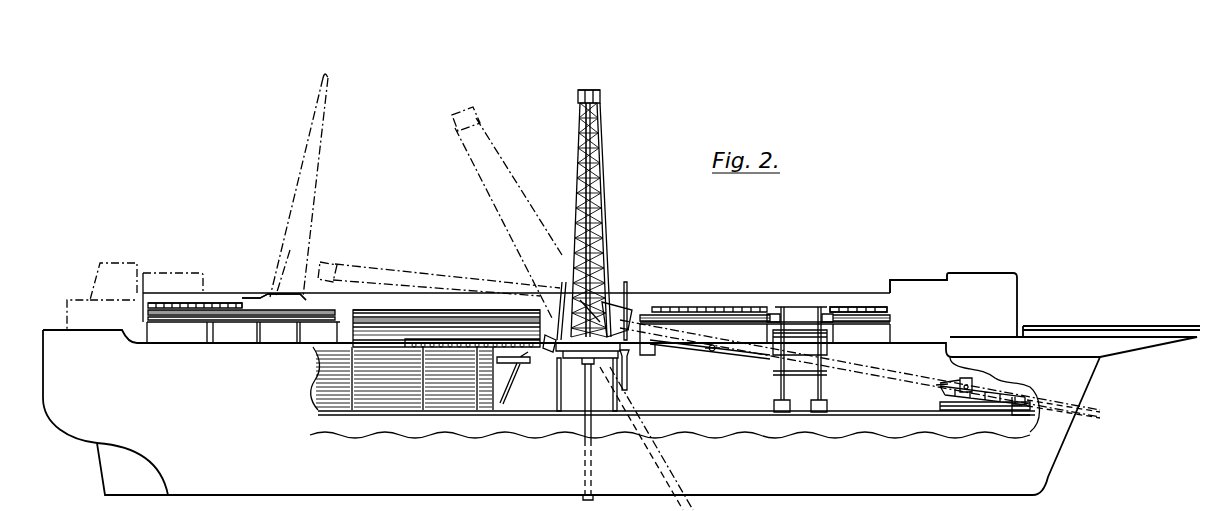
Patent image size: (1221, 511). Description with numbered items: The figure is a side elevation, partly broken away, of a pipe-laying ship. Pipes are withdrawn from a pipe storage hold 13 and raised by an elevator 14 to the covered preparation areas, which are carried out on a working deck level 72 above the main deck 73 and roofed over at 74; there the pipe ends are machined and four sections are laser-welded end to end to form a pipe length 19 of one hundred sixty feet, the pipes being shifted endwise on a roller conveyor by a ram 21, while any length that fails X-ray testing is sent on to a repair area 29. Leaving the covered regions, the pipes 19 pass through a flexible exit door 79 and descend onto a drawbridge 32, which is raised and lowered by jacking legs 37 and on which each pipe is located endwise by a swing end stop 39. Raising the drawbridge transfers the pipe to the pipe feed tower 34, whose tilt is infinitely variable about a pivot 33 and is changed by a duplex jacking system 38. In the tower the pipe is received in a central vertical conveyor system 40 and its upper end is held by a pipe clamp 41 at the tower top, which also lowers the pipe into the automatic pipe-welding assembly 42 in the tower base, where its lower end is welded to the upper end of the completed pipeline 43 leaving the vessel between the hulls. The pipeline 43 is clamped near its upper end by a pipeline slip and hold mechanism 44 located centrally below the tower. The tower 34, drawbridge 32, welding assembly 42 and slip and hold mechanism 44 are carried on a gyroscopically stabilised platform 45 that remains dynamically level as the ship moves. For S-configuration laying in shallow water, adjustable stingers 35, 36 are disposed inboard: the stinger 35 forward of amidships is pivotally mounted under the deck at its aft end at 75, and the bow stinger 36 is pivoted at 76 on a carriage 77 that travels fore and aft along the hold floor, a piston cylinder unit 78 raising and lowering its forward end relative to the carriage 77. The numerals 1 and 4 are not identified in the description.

The pipeline 1 is at (1068, 411).
The section line 4- 4 is at (830, 273).
The pipe storage hold 13 is at (758, 403).
The elevator 14 is at (820, 367).
The pipe length 19 is at (417, 323).
The ram 21 is at (847, 320).
The repair area 29 is at (214, 312).
The drawbridge 32 is at (512, 350).
The pivot 33 is at (574, 305).
The pipe feed tower 34 is at (578, 184).
The stinger 35 is at (740, 352).
The bow stinger 36 is at (1003, 393).
The jacking legs 37 is at (503, 398).
The duplex jacking system 38 is at (632, 355).
The swing end stop 39 is at (550, 348).
The central vertical conveyor system 40 is at (600, 178).
The pipe clamp 41 is at (600, 98).
The pipe-welding assembly 42 is at (597, 310).
The completed pipeline 43 is at (585, 410).
The pipeline slip and hold mechanism 44 is at (583, 357).
The gyroscopically stabilised platform 45 is at (626, 305).
The working deck level 72 is at (893, 330).
The main deck 73 is at (934, 342).
The roof 74 is at (244, 296).
The pivot mounting 75 is at (715, 348).
The pivot mounting 76 is at (963, 393).
The carriage 77 is at (990, 410).
The piston cylinder unit 78 is at (1017, 410).
The flexible exit door 79 is at (377, 310).